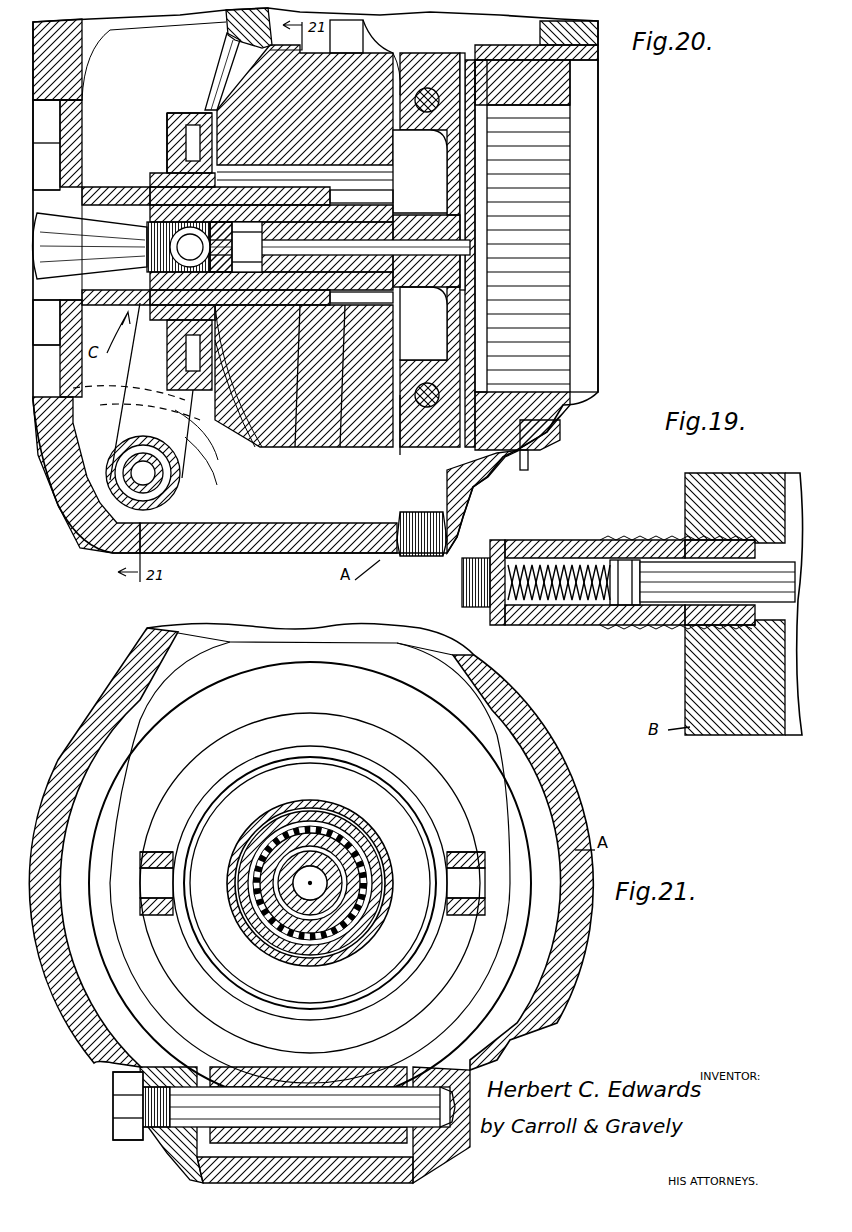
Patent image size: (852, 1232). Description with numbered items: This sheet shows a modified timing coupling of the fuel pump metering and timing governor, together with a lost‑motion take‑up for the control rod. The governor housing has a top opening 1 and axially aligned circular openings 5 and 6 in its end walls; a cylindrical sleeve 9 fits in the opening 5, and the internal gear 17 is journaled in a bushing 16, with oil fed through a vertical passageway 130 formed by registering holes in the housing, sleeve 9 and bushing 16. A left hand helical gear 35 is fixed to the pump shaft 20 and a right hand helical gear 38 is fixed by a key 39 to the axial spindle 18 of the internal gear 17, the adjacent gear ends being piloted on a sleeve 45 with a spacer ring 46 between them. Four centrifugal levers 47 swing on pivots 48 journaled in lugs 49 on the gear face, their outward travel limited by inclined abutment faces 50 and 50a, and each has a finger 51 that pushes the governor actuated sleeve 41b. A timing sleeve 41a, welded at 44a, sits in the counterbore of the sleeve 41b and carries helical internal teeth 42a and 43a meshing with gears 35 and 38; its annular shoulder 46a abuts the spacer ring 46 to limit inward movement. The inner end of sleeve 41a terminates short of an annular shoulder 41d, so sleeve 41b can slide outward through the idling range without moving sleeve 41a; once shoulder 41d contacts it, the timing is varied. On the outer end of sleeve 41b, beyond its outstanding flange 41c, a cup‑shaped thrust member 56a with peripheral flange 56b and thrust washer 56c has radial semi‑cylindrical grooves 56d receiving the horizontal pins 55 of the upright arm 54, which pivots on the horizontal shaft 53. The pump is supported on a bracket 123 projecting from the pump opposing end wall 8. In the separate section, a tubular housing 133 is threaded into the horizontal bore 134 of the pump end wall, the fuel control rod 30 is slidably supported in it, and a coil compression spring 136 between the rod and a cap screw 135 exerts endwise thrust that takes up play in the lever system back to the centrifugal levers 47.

In FIG. 20, the top opening 1 is at (575, 40).
In FIG. 20, the circular opening 5 is at (590, 70).
In FIG. 20, the circular opening 6 is at (78, 125).
In FIG. 20, the pump opposing end wall 8 is at (86, 68).
In FIG. 21, the pump opposing end wall 8 is at (533, 788).
In FIG. 20, the cylindrical sleeve 9 is at (530, 450).
In FIG. 20, the bushing 16 is at (572, 90).
In FIG. 20, the internal gear 17 is at (565, 228).
In FIG. 20, the axial spindle 18 is at (423, 323).
In FIG. 20, the pump shaft 20 is at (113, 215).
In FIG. 21, the pump shaft 20 is at (293, 883).
In FIG. 19, the fuel control rod 30 is at (668, 542).
In FIG. 20, the left hand helical gear 35 is at (105, 310).
In FIG. 20, the right hand helical gear 38 is at (320, 400).
In FIG. 21, the right hand helical gear 38 is at (355, 868).
In FIG. 20, the key 39 is at (372, 233).
In FIG. 20, the timing sleeve 41a is at (280, 390).
In FIG. 21, the timing sleeve 41a is at (325, 815).
In FIG. 20, the governor actuated sleeve 41b is at (395, 325).
In FIG. 21, the governor actuated sleeve 41b is at (378, 823).
In FIG. 20, the outstanding flange 41c is at (235, 400).
In FIG. 21, the outstanding flange 41c is at (385, 930).
In FIG. 20, the annular shoulder 41d is at (318, 420).
In FIG. 20, the internal gear teeth 42a is at (285, 420).
In FIG. 20, the internal gear teeth 43a is at (150, 305).
In FIG. 20, the weld 44a is at (215, 300).
In FIG. 20, the sleeve 45 is at (150, 272).
In FIG. 21, the sleeve 45 is at (342, 883).
In FIG. 20, the spacer ring 46 is at (195, 113).
In FIG. 20, the annular shoulder 46a is at (167, 355).
In FIG. 20, the centrifugal levers 47 is at (370, 60).
In FIG. 20, the pivots 48 is at (440, 75).
In FIG. 20, the lugs 49 is at (427, 88).
In FIG. 20, the abutment faces 50 is at (397, 435).
In FIG. 20, the abutment faces 50a is at (420, 70).
In FIG. 20, the finger 51 is at (416, 160).
In FIG. 20, the horizontal shaft 53 is at (125, 480).
In FIG. 21, the horizontal shaft 53 is at (300, 1085).
In FIG. 20, the upright arm 54 is at (230, 60).
In FIG. 21, the upright arm 54 is at (323, 662).
In FIG. 20, the horizontal pins 55 is at (150, 243).
In FIG. 21, the horizontal pins 55 is at (150, 852).
In FIG. 20, the cup-shaped thrust member 56a is at (167, 128).
In FIG. 21, the cup-shaped thrust member 56a is at (403, 962).
In FIG. 20, the peripheral flange 56b is at (170, 113).
In FIG. 21, the peripheral flange 56b is at (357, 757).
In FIG. 20, the thrust washer 56c is at (186, 136).
In FIG. 20, the semi-cylindrical grooves 56d is at (170, 173).
In FIG. 21, the semi-cylindrical grooves 56d is at (475, 860).
In FIG. 20, the bracket 123 is at (73, 388).
In FIG. 20, the vertical passageway 130 is at (525, 470).
In FIG. 19, the tubular housing 133 is at (570, 540).
In FIG. 19, the horizontal bore 134 is at (770, 620).
In FIG. 19, the cap screw 135 is at (470, 607).
In FIG. 19, the coil compression spring 136 is at (565, 600).